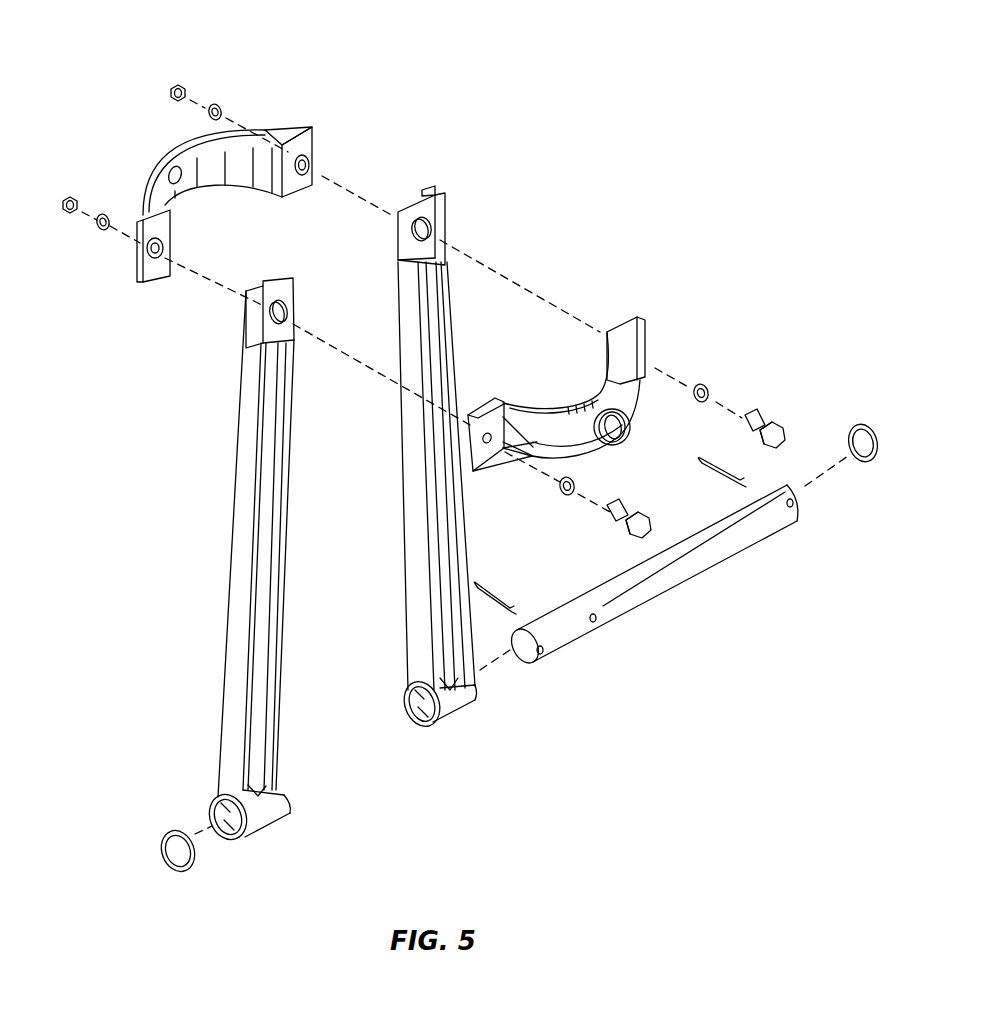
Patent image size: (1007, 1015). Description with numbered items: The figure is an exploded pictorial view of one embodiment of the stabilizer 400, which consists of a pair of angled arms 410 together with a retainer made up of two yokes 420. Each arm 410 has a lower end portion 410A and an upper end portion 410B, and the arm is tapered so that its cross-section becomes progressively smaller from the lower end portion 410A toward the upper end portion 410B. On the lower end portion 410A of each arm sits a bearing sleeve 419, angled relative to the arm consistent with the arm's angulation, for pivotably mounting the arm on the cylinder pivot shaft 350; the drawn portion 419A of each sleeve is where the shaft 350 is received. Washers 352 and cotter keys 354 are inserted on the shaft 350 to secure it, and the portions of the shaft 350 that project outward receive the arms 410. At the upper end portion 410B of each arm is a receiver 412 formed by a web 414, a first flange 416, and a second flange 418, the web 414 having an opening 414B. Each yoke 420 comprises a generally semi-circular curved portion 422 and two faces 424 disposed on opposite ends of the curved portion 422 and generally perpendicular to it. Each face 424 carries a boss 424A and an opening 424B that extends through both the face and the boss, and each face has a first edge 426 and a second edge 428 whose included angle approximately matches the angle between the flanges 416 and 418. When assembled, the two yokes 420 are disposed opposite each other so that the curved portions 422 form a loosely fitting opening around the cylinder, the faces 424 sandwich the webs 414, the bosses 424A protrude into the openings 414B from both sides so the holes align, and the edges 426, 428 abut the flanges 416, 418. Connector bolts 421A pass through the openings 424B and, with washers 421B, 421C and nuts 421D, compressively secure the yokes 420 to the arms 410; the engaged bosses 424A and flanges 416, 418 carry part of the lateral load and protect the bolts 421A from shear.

The stabilizer 400 is at (597, 162).
The angled arm 410 is at (478, 539).
The lower end portion 410A is at (230, 745).
The upper end portion 410B is at (253, 333).
The receiver 412 is at (369, 300).
The web 414 is at (278, 298).
The opening 414B is at (285, 321).
The first flange 416 is at (253, 313).
The second flange 418 is at (290, 343).
The bearing sleeve 419 is at (265, 820).
The hub bore 419A is at (228, 840).
The yoke 420 is at (442, 277).
The connector bolt 421A is at (762, 422).
The washer 421B is at (712, 388).
The washer 421C is at (218, 104).
The nut 421D is at (178, 84).
The curved portion 422 is at (195, 163).
The face 424 is at (148, 213).
The boss 424A is at (161, 247).
The opening 424B is at (161, 254).
The first edge 426 is at (138, 268).
The second edge 428 is at (158, 278).
The cylinder pivot shaft 350 is at (680, 553).
The washer 352 is at (163, 835).
The cotter key 354 is at (492, 590).